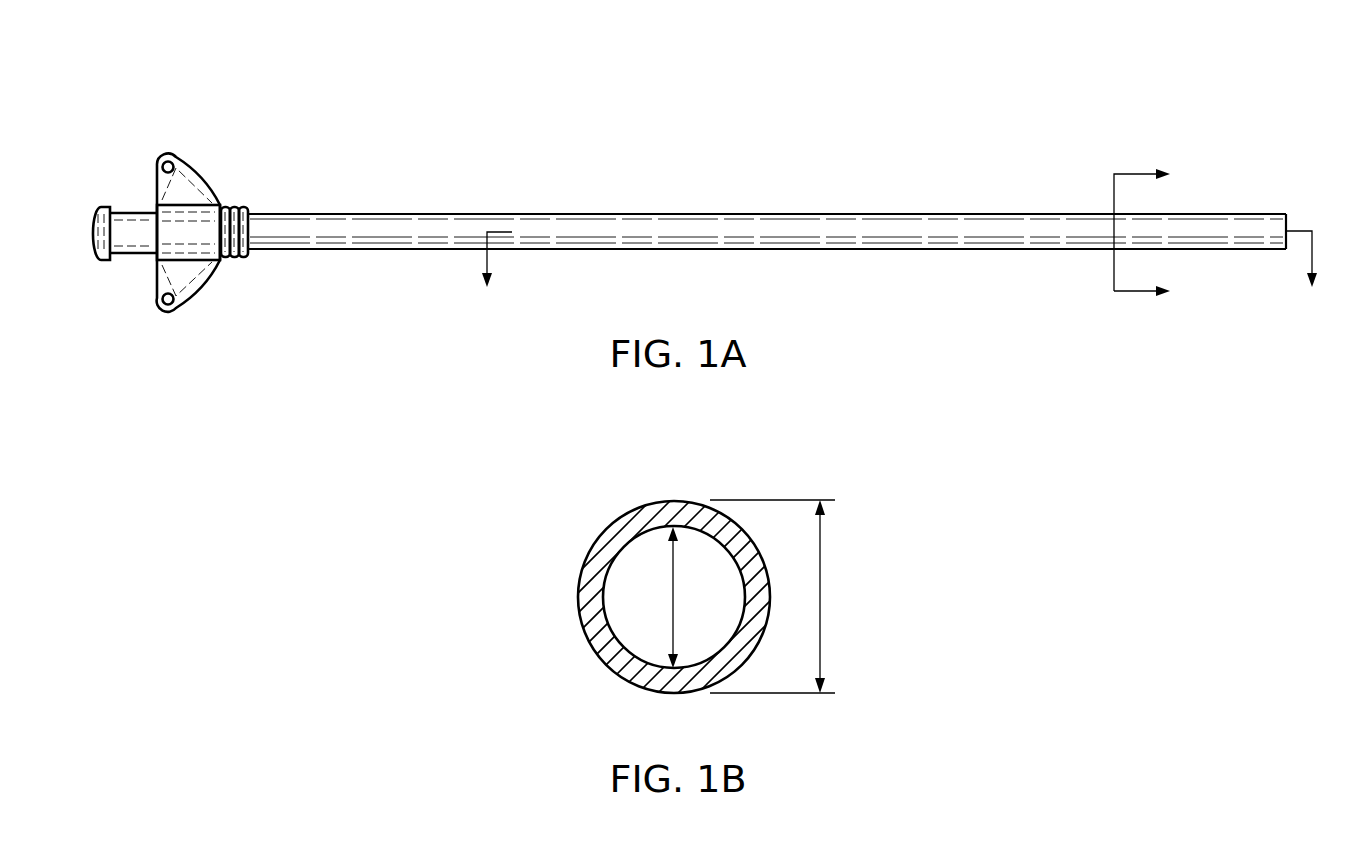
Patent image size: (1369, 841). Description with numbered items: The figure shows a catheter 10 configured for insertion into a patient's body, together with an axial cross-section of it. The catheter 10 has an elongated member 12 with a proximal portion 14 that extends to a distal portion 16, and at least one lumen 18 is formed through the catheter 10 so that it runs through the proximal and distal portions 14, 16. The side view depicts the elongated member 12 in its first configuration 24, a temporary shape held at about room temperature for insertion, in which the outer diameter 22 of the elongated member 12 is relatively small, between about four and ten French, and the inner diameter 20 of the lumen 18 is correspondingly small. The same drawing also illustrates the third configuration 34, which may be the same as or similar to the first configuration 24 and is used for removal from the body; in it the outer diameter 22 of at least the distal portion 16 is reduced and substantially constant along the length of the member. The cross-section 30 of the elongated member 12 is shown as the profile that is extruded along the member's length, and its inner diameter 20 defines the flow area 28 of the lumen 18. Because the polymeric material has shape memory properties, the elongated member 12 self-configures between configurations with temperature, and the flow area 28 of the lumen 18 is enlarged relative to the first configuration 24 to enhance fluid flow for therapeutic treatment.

In FIG. 1A, the catheter 10 is at (757, 131).
In FIG. 1A, the elongated member 12 is at (806, 188).
In FIG. 1A, the proximal portion 14 is at (293, 235).
In FIG. 1A, the distal portion 16 is at (1059, 233).
In FIG. 1B, the lumen 18 is at (638, 627).
In FIG. 1B, the inner diameter 20 is at (673, 593).
In FIG. 1B, the outer diameter 22 is at (820, 593).
In FIG. 1A, the first configuration 24 is at (957, 223).
In FIG. 1B, the flow area 28 is at (702, 557).
In FIG. 1B, the cross-section 30 is at (648, 512).
In FIG. 1A, the third configuration 34 is at (925, 228).